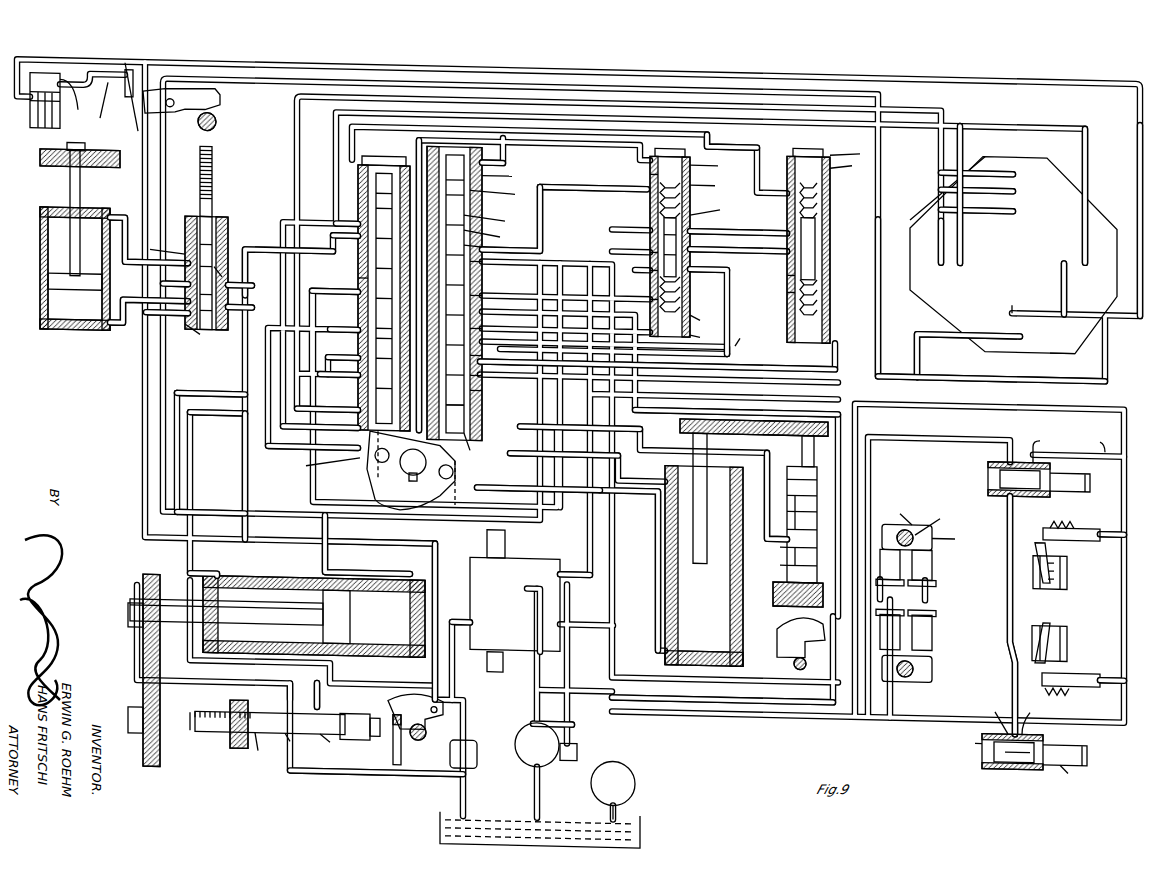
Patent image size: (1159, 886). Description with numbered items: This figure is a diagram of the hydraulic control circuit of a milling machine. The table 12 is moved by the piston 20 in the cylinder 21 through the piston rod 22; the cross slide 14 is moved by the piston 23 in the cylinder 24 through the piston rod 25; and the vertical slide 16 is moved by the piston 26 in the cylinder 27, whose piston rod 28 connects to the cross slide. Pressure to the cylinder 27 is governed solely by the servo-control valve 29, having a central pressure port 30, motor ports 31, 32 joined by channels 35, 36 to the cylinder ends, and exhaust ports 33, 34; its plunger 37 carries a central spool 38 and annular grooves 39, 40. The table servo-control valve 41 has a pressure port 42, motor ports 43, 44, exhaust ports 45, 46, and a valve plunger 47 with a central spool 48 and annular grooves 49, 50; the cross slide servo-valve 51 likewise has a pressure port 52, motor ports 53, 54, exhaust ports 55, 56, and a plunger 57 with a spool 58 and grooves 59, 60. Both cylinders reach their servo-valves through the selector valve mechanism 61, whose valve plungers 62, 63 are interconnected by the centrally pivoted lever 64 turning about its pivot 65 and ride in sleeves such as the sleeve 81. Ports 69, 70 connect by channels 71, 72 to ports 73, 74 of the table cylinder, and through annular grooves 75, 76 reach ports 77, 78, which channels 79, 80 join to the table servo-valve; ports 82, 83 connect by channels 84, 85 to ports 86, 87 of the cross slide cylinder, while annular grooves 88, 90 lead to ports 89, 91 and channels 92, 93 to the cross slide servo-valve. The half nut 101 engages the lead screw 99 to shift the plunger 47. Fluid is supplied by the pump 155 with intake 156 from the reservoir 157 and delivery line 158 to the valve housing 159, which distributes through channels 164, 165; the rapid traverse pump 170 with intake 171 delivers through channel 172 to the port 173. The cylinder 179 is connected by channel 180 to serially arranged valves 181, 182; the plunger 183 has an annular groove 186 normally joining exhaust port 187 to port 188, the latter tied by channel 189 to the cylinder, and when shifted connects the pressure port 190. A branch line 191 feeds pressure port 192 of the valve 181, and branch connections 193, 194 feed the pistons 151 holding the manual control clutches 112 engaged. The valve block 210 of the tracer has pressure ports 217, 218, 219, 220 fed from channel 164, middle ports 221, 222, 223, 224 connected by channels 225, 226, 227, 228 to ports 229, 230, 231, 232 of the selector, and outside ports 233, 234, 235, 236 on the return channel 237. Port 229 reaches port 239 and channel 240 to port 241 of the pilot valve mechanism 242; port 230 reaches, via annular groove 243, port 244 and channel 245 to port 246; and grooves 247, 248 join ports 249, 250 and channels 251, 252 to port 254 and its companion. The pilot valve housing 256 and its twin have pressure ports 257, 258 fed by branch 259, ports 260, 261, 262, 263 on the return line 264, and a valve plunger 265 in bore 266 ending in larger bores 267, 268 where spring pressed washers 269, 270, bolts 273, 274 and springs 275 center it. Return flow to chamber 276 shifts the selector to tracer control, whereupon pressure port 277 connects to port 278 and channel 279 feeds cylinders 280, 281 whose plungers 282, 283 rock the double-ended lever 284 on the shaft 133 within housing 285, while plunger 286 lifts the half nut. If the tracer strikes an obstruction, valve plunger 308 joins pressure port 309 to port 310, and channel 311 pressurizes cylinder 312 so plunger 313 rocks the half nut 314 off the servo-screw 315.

The table 12 is at (143, 668).
The cross slide 14 is at (800, 406).
The vertical slide 16 is at (95, 165).
The piston 20 is at (312, 580).
The cylinder 21 is at (370, 636).
The piston rod 22 is at (192, 596).
The piston 23 is at (210, 559).
The cylinder 24 is at (743, 600).
The piston rod 25 is at (693, 526).
The piston 26 is at (50, 285).
The cylinder 27 is at (40, 312).
The piston rod 28 is at (70, 189).
The servo-control valve 29 is at (230, 220).
The central pressure port 30 is at (165, 300).
The motor port 31 is at (175, 315).
The motor port 32 is at (157, 248).
The exhaust port 33 is at (205, 318).
The exhaust port 34 is at (197, 225).
The channel 35 is at (118, 322).
The channel 36 is at (118, 214).
The plunger 37 is at (214, 200).
The central spool 38 is at (249, 287).
The annular groove 39 is at (222, 260).
The annular groove 40 is at (249, 301).
The servo-control valve 41 is at (248, 745).
The pressure port 42 is at (306, 686).
The motor port 43 is at (250, 710).
The motor port 44 is at (355, 706).
The exhaust port 45 is at (258, 758).
The exhaust port 46 is at (352, 764).
The valve plunger 47 is at (375, 710).
The central spool 48 is at (290, 730).
The annular groove 49 is at (292, 744).
The annular groove 50 is at (328, 744).
The servo-valve 51 is at (812, 450).
The pressure port 52 is at (808, 535).
The motor port 53 is at (787, 530).
The motor port 54 is at (808, 503).
The exhaust port 55 is at (787, 548).
The exhaust port 56 is at (808, 486).
The valve plunger 57 is at (812, 462).
The central spool 58 is at (771, 496).
The annular groove 59 is at (818, 548).
The annular groove 60 is at (330, 186).
The selector valve mechanism 61 is at (413, 280).
The valve plunger 62 is at (372, 432).
The valve plunger 63 is at (452, 462).
The lever 64 is at (376, 460).
The cam shaft 65 is at (408, 466).
The port 69 is at (345, 243).
The port 70 is at (342, 346).
The channel 71 is at (243, 457).
The channel 72 is at (380, 554).
The port 73 is at (213, 560).
The port 74 is at (375, 544).
The annular groove 75 is at (381, 325).
The annular groove 76 is at (381, 298).
The port 77 is at (344, 320).
The port 78 is at (347, 212).
The channel 79 is at (211, 381).
The channel 80 is at (217, 422).
The sleeve 81 is at (480, 140).
The port 82 is at (485, 270).
The port 83 is at (481, 398).
The channel 84 is at (575, 480).
The channel 85 is at (585, 413).
The port 86 is at (704, 642).
The port 87 is at (658, 500).
The annular groove 88 is at (451, 420).
The port 89 is at (468, 430).
The annular groove 90 is at (453, 294).
The port 91 is at (483, 301).
The channel 92 is at (564, 446).
The channel 93 is at (722, 416).
The lead screw 99 is at (416, 732).
The half nut 101 is at (416, 706).
The manual control clutches 112 is at (1049, 609).
The shaft 133 is at (941, 519).
The pistons 151 is at (1070, 650).
The pump 155 is at (520, 752).
The intake 156 is at (525, 784).
The reservoir 157 is at (636, 818).
The delivery line 158 is at (537, 723).
The valve housing 159 is at (548, 556).
The channel 164 is at (918, 60).
The channel 165 is at (1124, 566).
The pump 170 is at (628, 766).
The intake 171 is at (622, 790).
The delivery channel 172 is at (582, 750).
The port 173 is at (470, 600).
The cylinder 179 is at (503, 652).
The channel 180 is at (722, 690).
The valve 181 is at (988, 443).
The valve 182 is at (995, 747).
The plunger 183 is at (1070, 777).
The annular groove 186 is at (1012, 747).
The exhaust port 187 is at (982, 722).
The port 188 is at (990, 715).
The channel 189 is at (1010, 650).
The pressure port 190 is at (1037, 717).
The branch line 191 is at (1095, 441).
The pressure port 192 is at (1043, 446).
The branch connection 193 is at (1118, 508).
The branch connection 194 is at (1116, 654).
The valve block 210 is at (1068, 330).
The pressure port 217 is at (1066, 240).
The pressure port 218 is at (1012, 291).
The pressure port 219 is at (964, 245).
The pressure port 220 is at (1013, 191).
The middle port 221 is at (1087, 240).
The middle port 222 is at (1020, 312).
The middle port 223 is at (1075, 249).
The middle port 224 is at (1013, 167).
The channel 225 is at (1136, 146).
The channel 226 is at (991, 362).
The channel 227 is at (941, 133).
The channel 228 is at (880, 300).
The port 229 is at (368, 262).
The port 230 is at (490, 252).
The port 231 is at (339, 381).
The port 232 is at (484, 360).
The outside port 233 is at (658, 290).
The outside port 234 is at (1051, 353).
The outside port 235 is at (941, 242).
The outside port 236 is at (1013, 148).
The return channel 237 is at (854, 149).
The port 239 is at (335, 299).
The channel 240 is at (320, 466).
The port 241 is at (658, 182).
The pilot valve mechanism 242 is at (714, 182).
The annular groove 243 is at (495, 237).
The port 244 is at (498, 220).
The channel 245 is at (503, 152).
The port 246 is at (795, 178).
The annular groove 247 is at (319, 428).
The annular groove 248 is at (484, 382).
The port 249 is at (319, 410).
The port 250 is at (486, 333).
The channel 251 is at (313, 448).
The channel 252 is at (657, 352).
The port 254 is at (795, 280).
The valve housing 256 is at (852, 162).
The pressure port 257 is at (738, 223).
The pressure port 258 is at (738, 256).
The branch 259 is at (745, 342).
The port 260 is at (717, 207).
The port 261 is at (708, 311).
The port 262 is at (795, 212).
The port 263 is at (795, 262).
The return line 264 is at (715, 130).
The valve plunger 265 is at (664, 216).
The bore 266 is at (650, 240).
The larger bore 267 is at (716, 162).
The larger bore 268 is at (706, 323).
The spring pressed washer 269 is at (658, 196).
The spring pressed washer 270 is at (658, 262).
The bolt 273 is at (706, 339).
The bolt 274 is at (593, 176).
The springs 275 is at (682, 285).
The chamber 276 is at (384, 155).
The pressure port 277 is at (511, 176).
The port 278 is at (506, 193).
The channel 279 is at (545, 236).
The cylinder 280 is at (900, 572).
The cylinder 281 is at (936, 566).
The plunger 282 is at (912, 514).
The plunger 283 is at (932, 545).
The double-ended lever 284 is at (954, 532).
The housing 285 is at (393, 740).
The plunger 286 is at (787, 643).
The valve plunger 308 is at (30, 120).
The pressure port 309 is at (34, 124).
The port 310 is at (76, 102).
The channel 311 is at (100, 107).
The cylinder 312 is at (128, 95).
The plunger 313 is at (133, 111).
The half nut 314 is at (220, 94).
The servo-screw 315 is at (216, 115).